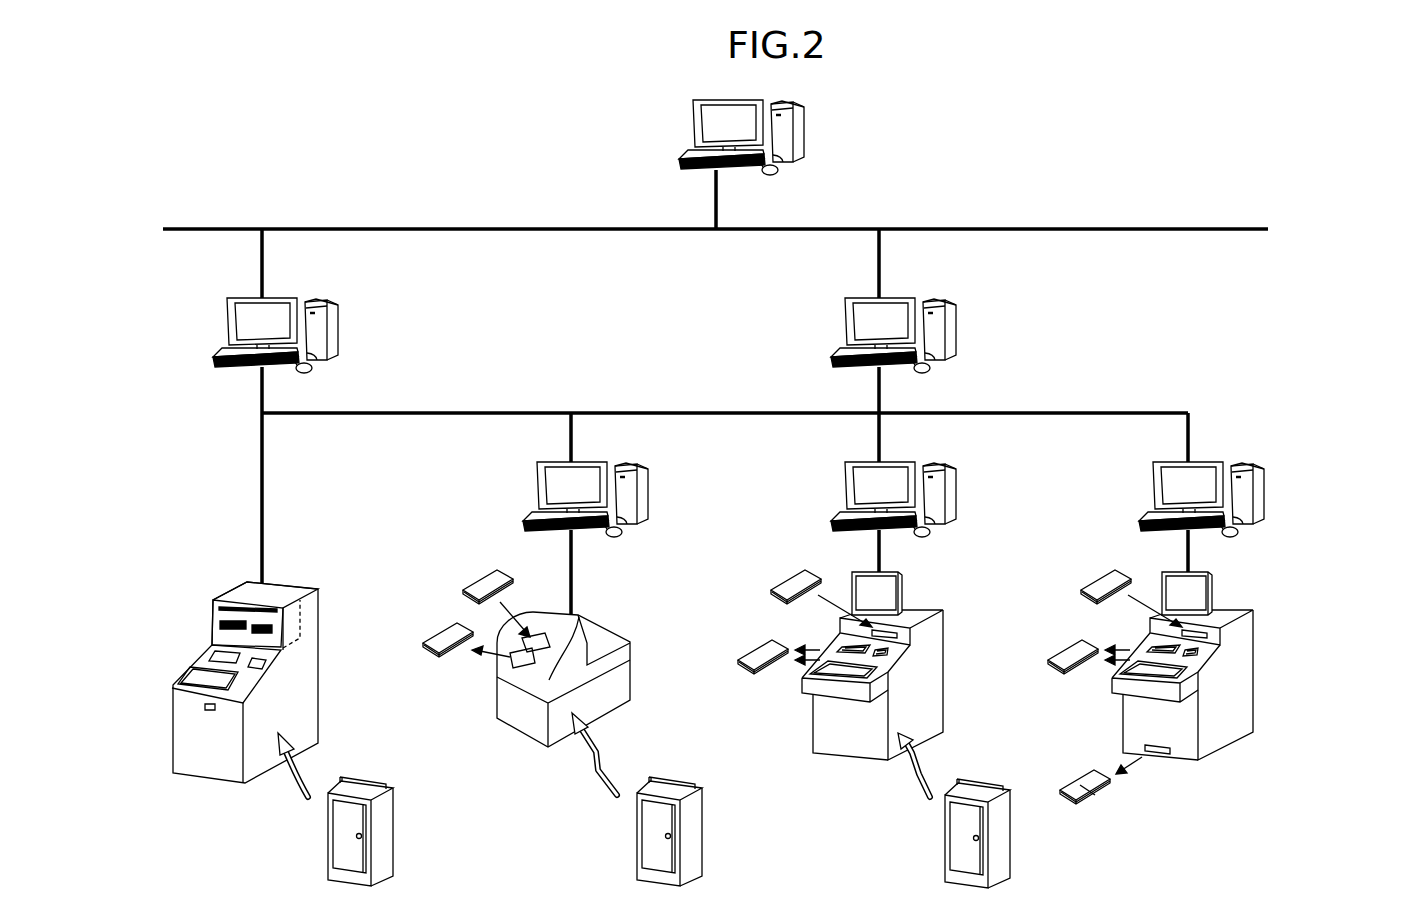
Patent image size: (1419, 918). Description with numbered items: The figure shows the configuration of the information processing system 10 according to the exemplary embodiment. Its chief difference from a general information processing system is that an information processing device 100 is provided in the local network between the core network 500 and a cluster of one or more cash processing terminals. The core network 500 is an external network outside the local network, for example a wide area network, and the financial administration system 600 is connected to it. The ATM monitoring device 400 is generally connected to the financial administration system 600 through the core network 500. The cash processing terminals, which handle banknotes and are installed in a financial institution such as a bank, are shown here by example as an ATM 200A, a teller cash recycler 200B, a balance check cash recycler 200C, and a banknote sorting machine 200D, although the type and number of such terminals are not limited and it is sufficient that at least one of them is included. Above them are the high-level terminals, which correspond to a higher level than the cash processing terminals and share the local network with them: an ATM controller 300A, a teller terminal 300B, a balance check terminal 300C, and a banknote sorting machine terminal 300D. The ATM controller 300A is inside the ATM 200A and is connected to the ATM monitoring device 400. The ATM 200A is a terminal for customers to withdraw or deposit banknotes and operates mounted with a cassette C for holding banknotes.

The information processing system 10 is at (1113, 125).
The core network 500 is at (998, 228).
The financial administration system 600 is at (804, 135).
The ATM monitoring device 400 is at (338, 333).
The information processing device 100 is at (956, 333).
The ATM controller 300A is at (303, 617).
The teller terminal 300B is at (648, 497).
The balance check terminal 300C is at (956, 497).
The banknote sorting machine terminal 300D is at (1265, 497).
The ATM 200A is at (315, 689).
The teller cash recycler 200B is at (600, 705).
The balance check cash recycler 200C is at (935, 712).
The banknote sorting machine 200D is at (1205, 752).
The cassette C is at (1037, 860).